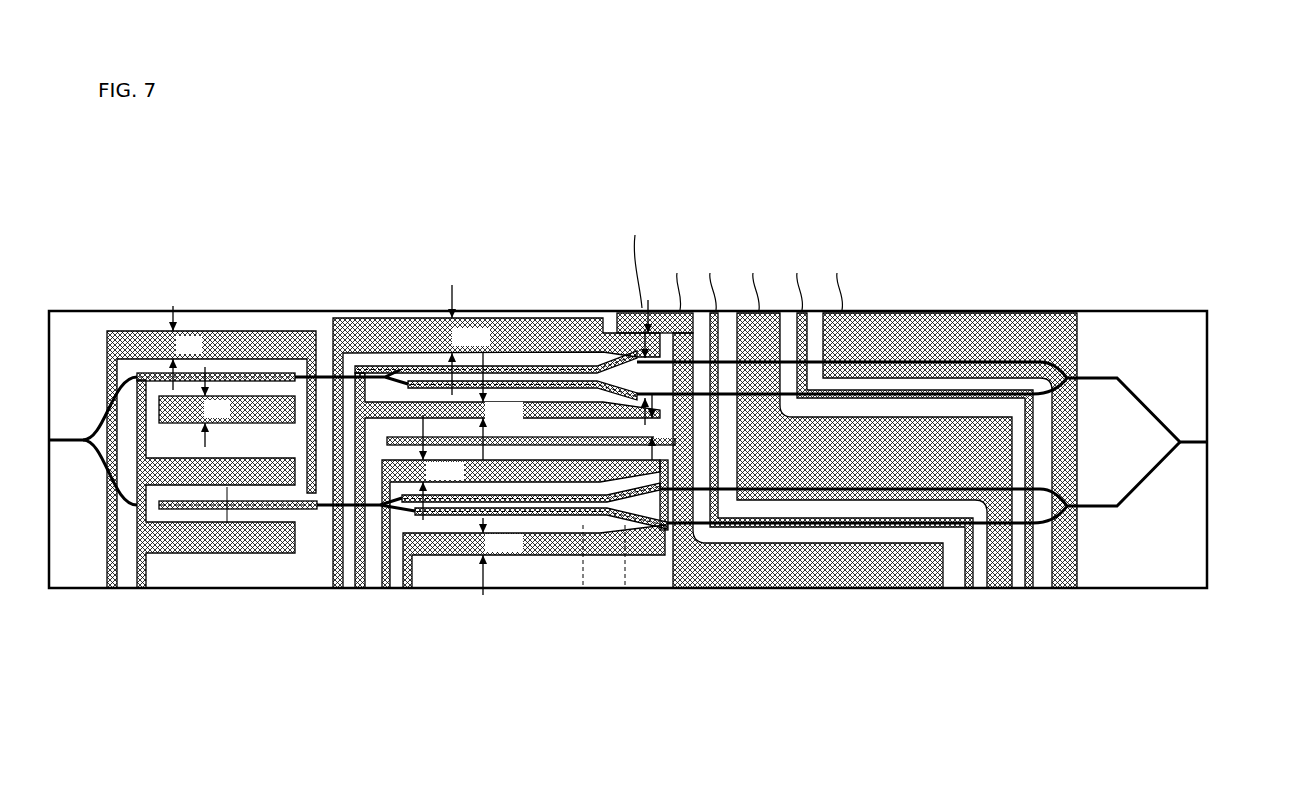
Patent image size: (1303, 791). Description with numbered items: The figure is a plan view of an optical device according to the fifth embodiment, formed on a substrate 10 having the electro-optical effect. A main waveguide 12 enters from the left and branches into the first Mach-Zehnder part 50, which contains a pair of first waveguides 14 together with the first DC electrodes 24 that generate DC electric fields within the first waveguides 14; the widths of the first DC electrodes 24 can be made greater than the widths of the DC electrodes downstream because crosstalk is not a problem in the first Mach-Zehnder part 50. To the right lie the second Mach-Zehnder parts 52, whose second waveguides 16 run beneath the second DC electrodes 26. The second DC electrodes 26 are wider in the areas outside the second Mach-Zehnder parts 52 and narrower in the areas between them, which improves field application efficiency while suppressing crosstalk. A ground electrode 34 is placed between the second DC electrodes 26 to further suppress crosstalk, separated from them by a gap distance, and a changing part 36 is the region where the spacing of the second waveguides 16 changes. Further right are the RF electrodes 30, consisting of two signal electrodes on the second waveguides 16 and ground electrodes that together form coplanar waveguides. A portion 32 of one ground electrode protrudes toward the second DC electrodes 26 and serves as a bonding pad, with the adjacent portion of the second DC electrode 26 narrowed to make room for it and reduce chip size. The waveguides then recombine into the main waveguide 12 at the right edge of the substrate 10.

The substrate 10 is at (1207, 477).
The main waveguide 12 is at (66, 433).
The first waveguides 14 is at (242, 373).
The second waveguides 16 is at (545, 365).
The first DC electrodes 24 is at (228, 340).
The second DC electrodes 26 is at (375, 330).
The RF electrodes 30 is at (858, 245).
The protruding portion 32 is at (630, 309).
The ground electrode 34 is at (593, 437).
The changing part 36 is at (630, 592).
The first Mach-Zehnder part 50 is at (208, 513).
The second Mach-Zehnder parts 52 is at (705, 482).